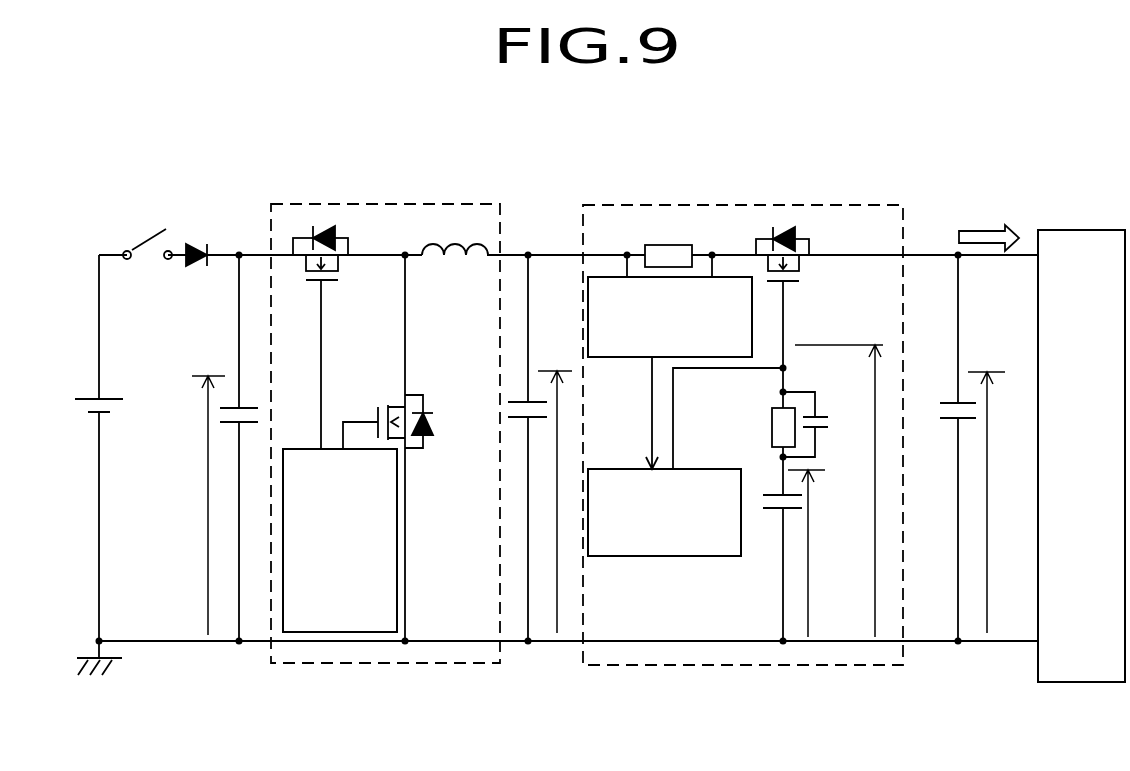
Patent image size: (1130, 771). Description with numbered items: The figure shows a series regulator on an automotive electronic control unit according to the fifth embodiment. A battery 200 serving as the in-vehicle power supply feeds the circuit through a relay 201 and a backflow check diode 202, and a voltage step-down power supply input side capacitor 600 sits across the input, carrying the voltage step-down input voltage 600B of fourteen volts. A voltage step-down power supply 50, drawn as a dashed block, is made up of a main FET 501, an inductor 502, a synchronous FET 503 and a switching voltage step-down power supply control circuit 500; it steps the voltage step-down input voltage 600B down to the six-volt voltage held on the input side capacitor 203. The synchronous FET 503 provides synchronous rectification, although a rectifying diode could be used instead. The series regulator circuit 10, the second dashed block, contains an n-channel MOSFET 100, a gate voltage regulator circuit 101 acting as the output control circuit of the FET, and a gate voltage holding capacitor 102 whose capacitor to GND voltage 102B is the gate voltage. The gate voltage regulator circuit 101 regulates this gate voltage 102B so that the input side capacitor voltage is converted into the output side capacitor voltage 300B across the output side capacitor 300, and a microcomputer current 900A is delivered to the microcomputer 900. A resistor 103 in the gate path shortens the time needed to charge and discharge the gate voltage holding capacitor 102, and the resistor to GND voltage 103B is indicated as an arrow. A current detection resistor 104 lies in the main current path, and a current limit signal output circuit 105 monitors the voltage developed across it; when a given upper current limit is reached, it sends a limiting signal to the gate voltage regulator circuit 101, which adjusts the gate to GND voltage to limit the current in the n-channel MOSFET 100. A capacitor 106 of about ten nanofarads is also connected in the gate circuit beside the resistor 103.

The series regulator circuit 10 is at (718, 205).
The voltage step-down power supply 50 is at (400, 204).
The n-channel MOSFET 100 is at (760, 245).
The gate voltage regulator circuit 101 is at (675, 558).
The gate voltage holding capacitor 102 is at (764, 505).
The capacitor to GND voltage (gate voltage) 102B is at (808, 560).
The resistor 103 is at (771, 425).
The resistor to GND voltage 103B is at (870, 385).
The current detection resistor 104 is at (663, 245).
The current limit signal output circuit 105 is at (612, 360).
The capacitor 106 is at (828, 423).
The battery 200 is at (90, 398).
The relay 201 is at (148, 240).
The backflow check diode 202 is at (197, 240).
The input side capacitor 203 is at (510, 401).
The output side capacitor 300 is at (950, 401).
The output side capacitor voltage 300B is at (555, 557).
The switching voltage step-down power supply control circuit 500 is at (297, 448).
The main FET 501 is at (349, 248).
The inductor 502 is at (450, 245).
The synchronous FET 503 is at (418, 455).
The voltage step-down power supply input side capacitor 600 is at (236, 407).
The voltage step-down input voltage 600B is at (206, 483).
The microcomputer 900 is at (1080, 229).
The microcomputer current 900A is at (985, 230).